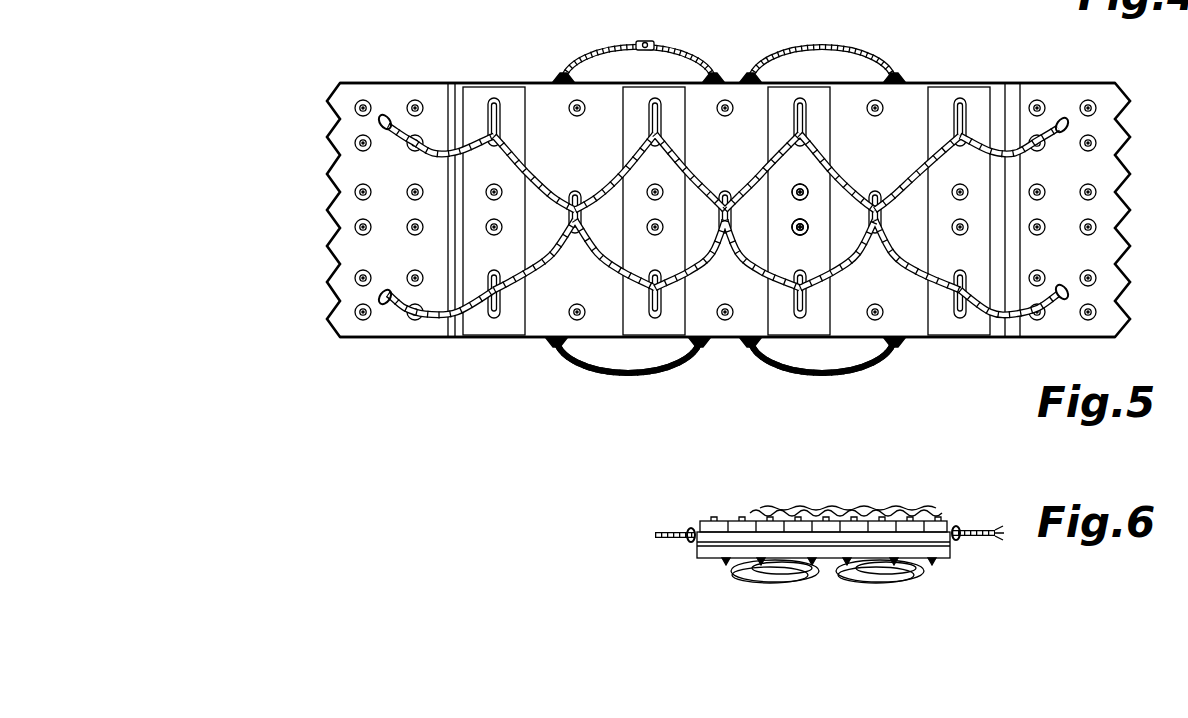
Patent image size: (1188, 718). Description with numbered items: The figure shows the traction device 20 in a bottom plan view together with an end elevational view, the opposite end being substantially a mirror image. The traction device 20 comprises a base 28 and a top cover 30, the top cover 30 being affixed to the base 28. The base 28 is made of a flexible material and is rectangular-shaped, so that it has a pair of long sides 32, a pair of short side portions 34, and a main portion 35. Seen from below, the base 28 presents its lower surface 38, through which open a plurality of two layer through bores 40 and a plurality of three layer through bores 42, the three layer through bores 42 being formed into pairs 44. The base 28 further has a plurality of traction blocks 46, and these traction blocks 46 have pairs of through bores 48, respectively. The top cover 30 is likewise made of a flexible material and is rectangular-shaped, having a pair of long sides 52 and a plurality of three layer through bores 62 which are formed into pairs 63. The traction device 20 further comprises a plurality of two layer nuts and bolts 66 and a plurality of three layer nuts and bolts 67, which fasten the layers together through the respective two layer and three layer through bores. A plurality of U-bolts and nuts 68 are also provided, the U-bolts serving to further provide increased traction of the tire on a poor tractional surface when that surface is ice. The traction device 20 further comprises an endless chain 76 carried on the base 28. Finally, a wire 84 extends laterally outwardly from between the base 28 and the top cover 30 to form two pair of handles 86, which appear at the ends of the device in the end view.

In FIG. 5, the traction device 20 is at (410, 52).
In FIG. 6, the traction device 20 is at (625, 507).
In FIG. 5, the base 28 is at (543, 104).
In FIG. 6, the top cover 30 is at (717, 520).
In FIG. 5, the long sides 32 is at (922, 80).
In FIG. 6, the long sides 32 is at (689, 548).
In FIG. 5, the short side portions 34 is at (355, 168).
In FIG. 6, the short side portions 34 is at (956, 556).
In FIG. 5, the main portion 35 is at (887, 127).
In FIG. 5, the lower surface 38 is at (748, 150).
In FIG. 5, the two layer through bores 40 is at (891, 312).
In FIG. 5, the three layer through bores 42 is at (795, 236).
In FIG. 5, the pairs 44 is at (813, 197).
In FIG. 5, the traction blocks 46 is at (818, 115).
In FIG. 6, the traction blocks 46 is at (722, 565).
In FIG. 5, the pairs of through bores 48 is at (852, 168).
In FIG. 6, the long sides 52 is at (693, 520).
In FIG. 5, the three layer through bores 62 is at (748, 317).
In FIG. 5, the pairs 63 is at (748, 317).
In FIG. 5, the two layer nuts and bolts 66 is at (568, 102).
In FIG. 5, the three layer nuts and bolts 67 is at (658, 186).
In FIG. 5, the U-bolts and nuts 68 is at (964, 110).
In FIG. 5, the endless chain 76 is at (911, 266).
In FIG. 6, the endless chain 76 is at (879, 579).
In FIG. 5, the wire 84 is at (583, 371).
In FIG. 5, the handles 86 is at (664, 372).